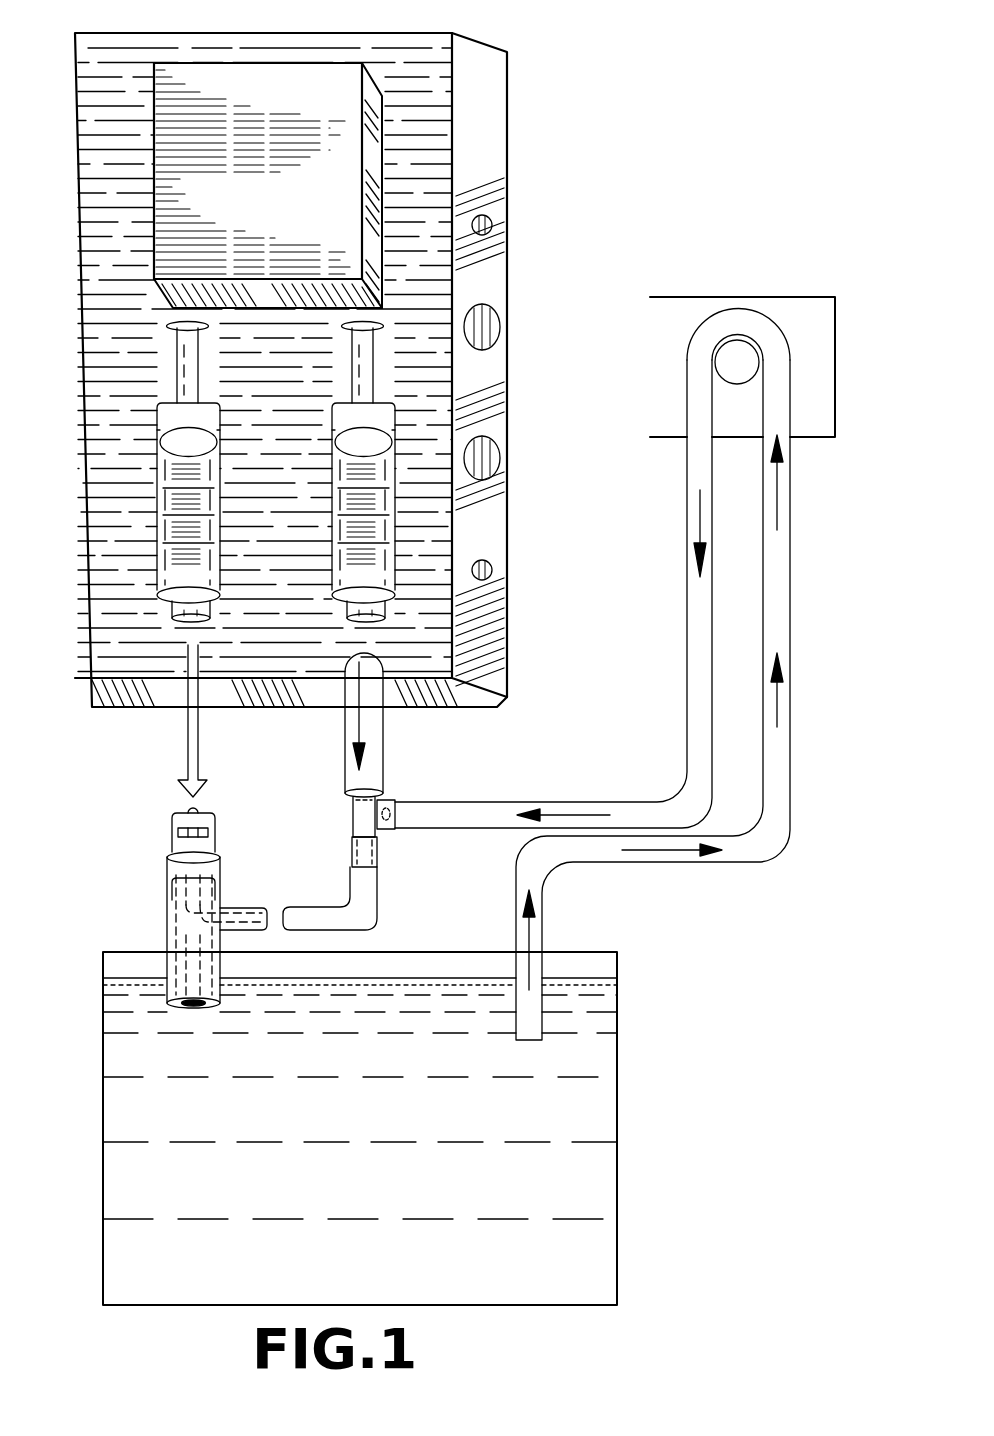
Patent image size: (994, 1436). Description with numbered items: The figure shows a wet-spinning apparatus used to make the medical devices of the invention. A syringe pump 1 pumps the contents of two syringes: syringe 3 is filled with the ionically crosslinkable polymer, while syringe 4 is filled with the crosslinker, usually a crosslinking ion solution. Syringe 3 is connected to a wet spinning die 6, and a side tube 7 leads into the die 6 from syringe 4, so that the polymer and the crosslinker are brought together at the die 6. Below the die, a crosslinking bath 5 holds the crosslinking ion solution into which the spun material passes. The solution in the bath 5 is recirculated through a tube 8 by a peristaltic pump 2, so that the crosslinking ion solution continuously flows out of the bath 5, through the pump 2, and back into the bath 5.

The syringe pump 1 is at (508, 236).
The peristaltic pump 2 is at (800, 297).
The syringe 3 is at (222, 505).
The syringe 4 is at (393, 488).
The crosslinking bath 5 is at (617, 1147).
The wet spinning die 6 is at (220, 863).
The side tube 7 is at (497, 802).
The tube 8 is at (658, 862).